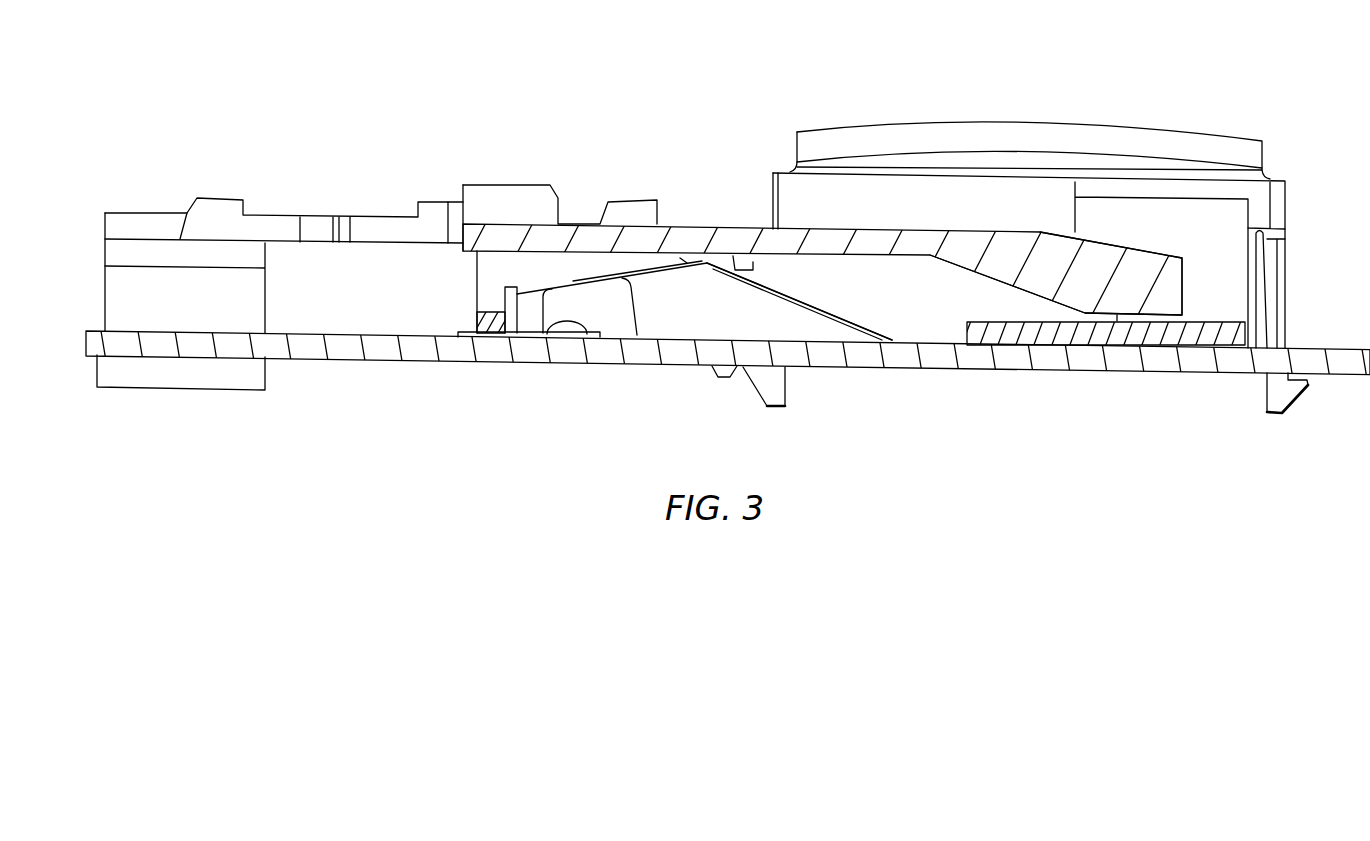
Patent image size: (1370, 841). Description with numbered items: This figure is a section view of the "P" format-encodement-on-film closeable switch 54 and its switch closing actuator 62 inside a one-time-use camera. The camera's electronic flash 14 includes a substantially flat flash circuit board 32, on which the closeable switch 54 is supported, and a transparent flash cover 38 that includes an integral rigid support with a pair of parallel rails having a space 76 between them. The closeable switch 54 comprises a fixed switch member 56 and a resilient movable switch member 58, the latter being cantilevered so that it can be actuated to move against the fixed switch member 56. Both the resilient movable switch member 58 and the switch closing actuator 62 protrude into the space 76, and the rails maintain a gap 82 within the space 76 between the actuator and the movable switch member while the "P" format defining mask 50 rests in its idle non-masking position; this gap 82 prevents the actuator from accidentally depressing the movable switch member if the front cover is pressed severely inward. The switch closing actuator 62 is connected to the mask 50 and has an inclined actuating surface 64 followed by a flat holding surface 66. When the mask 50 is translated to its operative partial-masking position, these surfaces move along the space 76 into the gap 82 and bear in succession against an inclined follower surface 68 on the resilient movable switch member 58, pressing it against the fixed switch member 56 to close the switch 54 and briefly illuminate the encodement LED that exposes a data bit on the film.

The electronic flash 14 is at (318, 374).
The flash circuit board 32 is at (430, 353).
The transparent flash cover 38 is at (1184, 141).
The "P" format defining mask 50 is at (283, 208).
The "P" format-encodement-on-film closeable switch 54 is at (520, 305).
The fixed switch member 56 is at (582, 334).
The resilient movable switch member 58 is at (661, 283).
The switch closing actuator 62 is at (706, 218).
The inclined actuating surface 64 is at (988, 282).
The flat holding surface 66 is at (1117, 322).
The inclined follower surface 68 is at (827, 306).
The space 76 is at (755, 272).
The gap 82 is at (687, 262).